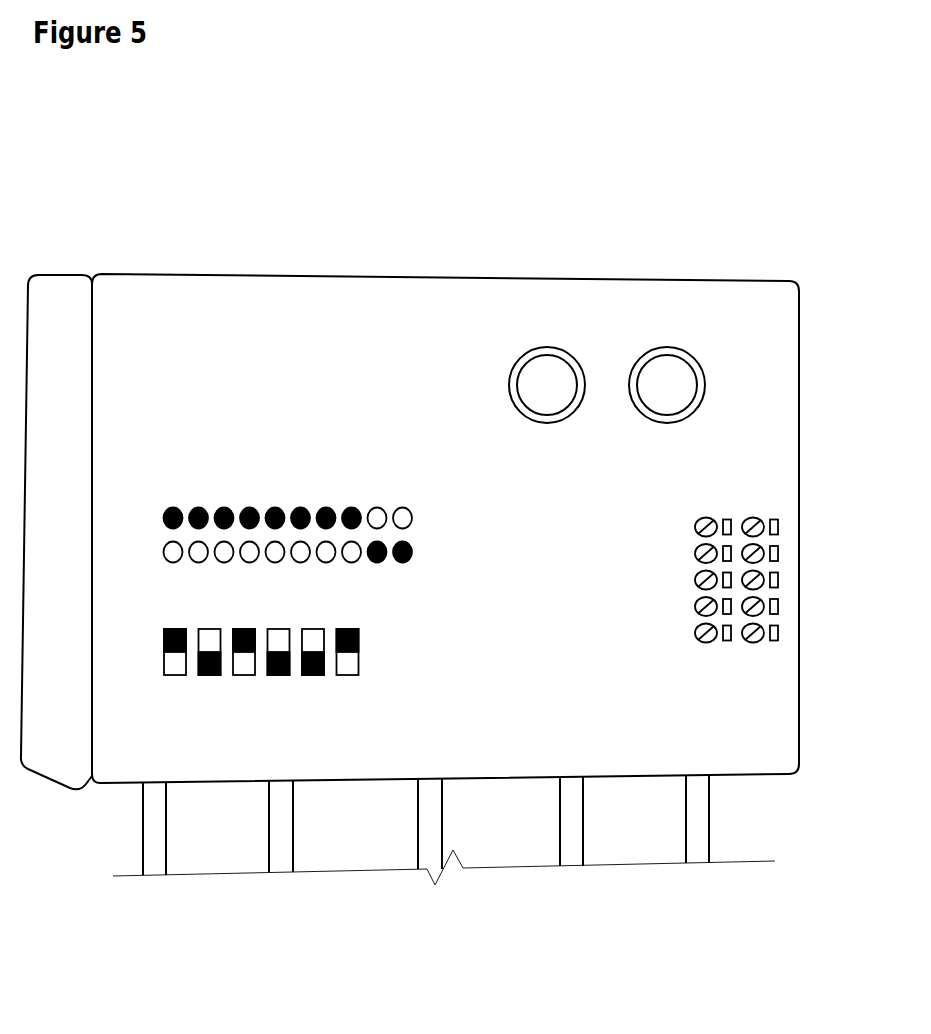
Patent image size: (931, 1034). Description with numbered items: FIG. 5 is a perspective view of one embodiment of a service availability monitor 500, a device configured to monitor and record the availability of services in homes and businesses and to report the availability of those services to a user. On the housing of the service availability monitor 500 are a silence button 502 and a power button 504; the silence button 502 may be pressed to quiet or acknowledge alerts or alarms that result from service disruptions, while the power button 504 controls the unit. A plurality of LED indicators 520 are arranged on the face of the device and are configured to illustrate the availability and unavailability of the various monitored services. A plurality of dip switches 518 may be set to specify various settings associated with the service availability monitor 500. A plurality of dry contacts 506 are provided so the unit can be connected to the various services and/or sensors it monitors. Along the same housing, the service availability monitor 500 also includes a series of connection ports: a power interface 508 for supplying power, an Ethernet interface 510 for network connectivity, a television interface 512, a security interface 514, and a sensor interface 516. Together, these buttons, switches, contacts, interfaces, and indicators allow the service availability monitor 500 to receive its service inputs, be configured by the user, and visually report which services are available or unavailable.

The service availability monitor 500 is at (101, 188).
The silence button 502 is at (510, 372).
The power button 504 is at (705, 372).
The dry contacts 506 is at (676, 501).
The power interface 508 is at (142, 806).
The Ethernet interface 510 is at (268, 803).
The television interface 512 is at (417, 798).
The security interface 514 is at (559, 796).
The sensor interface 516 is at (685, 791).
The dip switches 518 is at (176, 617).
The LED indicators 520 is at (176, 455).